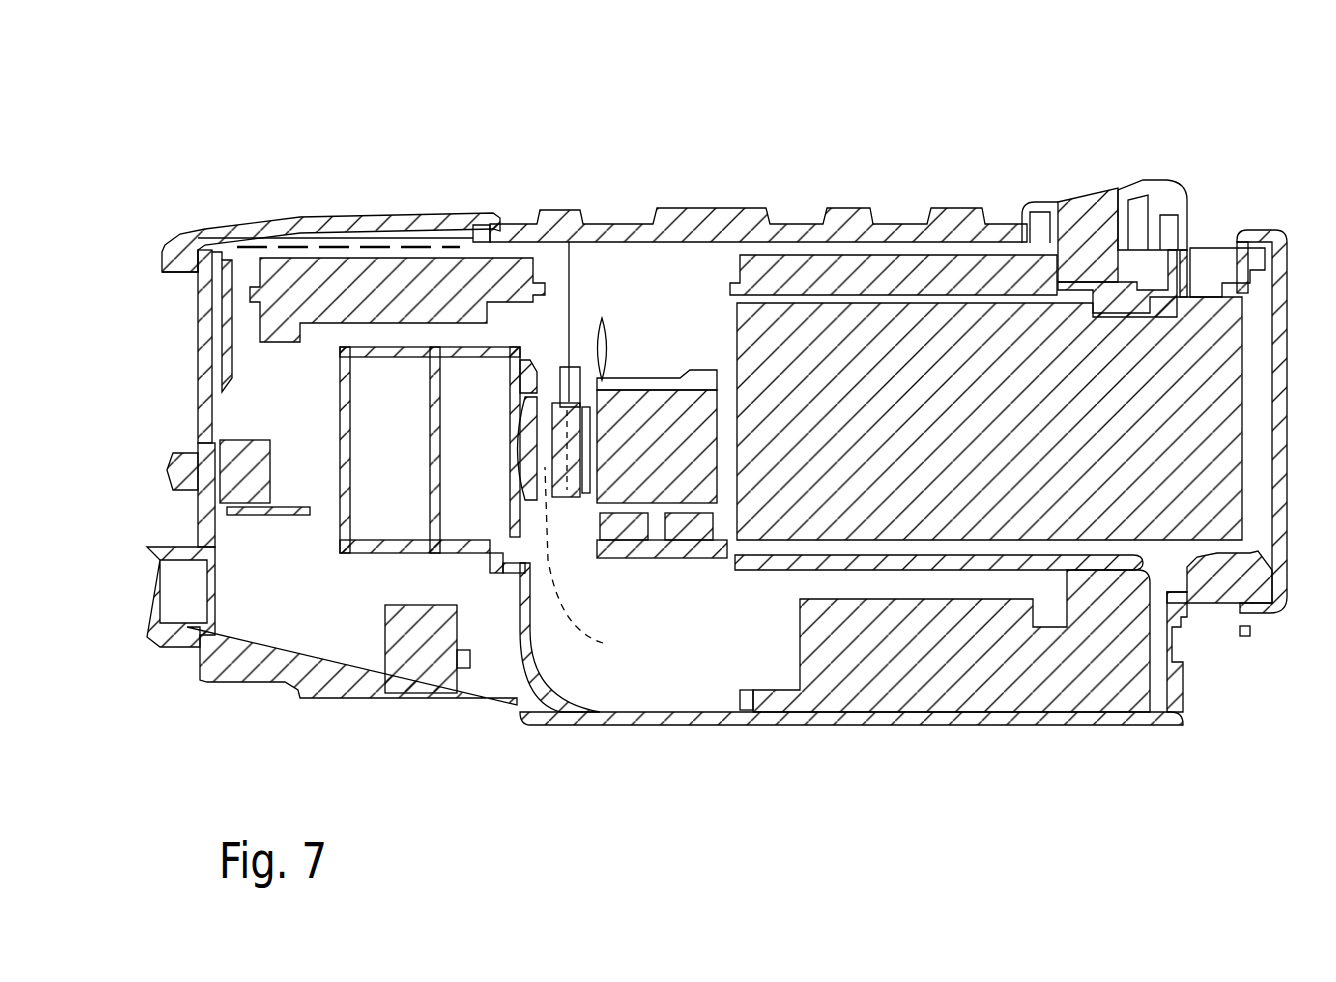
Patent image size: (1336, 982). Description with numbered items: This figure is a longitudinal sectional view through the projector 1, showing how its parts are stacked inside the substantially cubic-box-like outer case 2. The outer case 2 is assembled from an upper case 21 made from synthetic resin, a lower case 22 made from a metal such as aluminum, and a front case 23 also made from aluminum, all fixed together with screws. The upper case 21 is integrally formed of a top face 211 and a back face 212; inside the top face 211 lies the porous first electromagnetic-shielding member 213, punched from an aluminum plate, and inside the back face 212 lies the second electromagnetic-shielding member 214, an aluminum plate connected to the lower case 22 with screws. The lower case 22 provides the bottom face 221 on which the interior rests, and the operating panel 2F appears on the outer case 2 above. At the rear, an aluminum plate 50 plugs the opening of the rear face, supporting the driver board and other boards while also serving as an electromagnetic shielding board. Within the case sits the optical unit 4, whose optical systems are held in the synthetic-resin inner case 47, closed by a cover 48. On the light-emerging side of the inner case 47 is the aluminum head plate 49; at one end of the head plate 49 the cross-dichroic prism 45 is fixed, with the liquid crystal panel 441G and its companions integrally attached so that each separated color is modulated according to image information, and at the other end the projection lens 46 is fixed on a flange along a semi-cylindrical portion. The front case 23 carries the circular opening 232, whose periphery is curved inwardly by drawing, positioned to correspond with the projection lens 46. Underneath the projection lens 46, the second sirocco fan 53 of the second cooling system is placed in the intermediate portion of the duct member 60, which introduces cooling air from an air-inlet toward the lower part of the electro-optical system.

The projector 1 is at (1187, 92).
The outer case 2 is at (437, 221).
The upper case 21 is at (343, 221).
The top face 211 is at (220, 232).
The first electromagnetic-shielding member 213 is at (473, 243).
The operating panel 2F is at (730, 215).
The optical unit 4 is at (677, 272).
The lower case 22 is at (810, 725).
The back face 212 is at (203, 337).
The second electromagnetic-shielding member 214 is at (198, 290).
The aluminum plate 50 is at (228, 363).
The bottom face 221 is at (647, 720).
The duct member 60 is at (525, 662).
The second sirocco fan 53 is at (1000, 700).
The head plate 49 is at (730, 558).
The front case 23 is at (1183, 663).
The circular opening 232 is at (1188, 233).
The cover 48 is at (340, 365).
The inner case 47 is at (353, 550).
The cross-dichroic prism 45 is at (655, 387).
The liquid crystal panel 441G is at (609, 565).
The projection lens 46 is at (1223, 338).